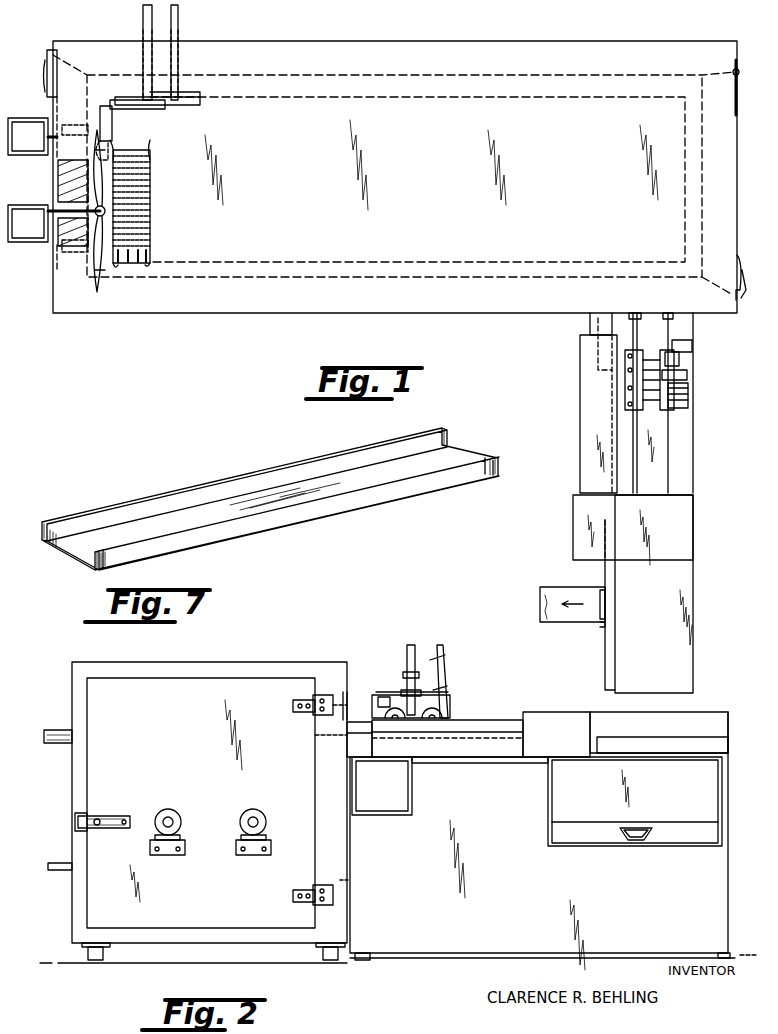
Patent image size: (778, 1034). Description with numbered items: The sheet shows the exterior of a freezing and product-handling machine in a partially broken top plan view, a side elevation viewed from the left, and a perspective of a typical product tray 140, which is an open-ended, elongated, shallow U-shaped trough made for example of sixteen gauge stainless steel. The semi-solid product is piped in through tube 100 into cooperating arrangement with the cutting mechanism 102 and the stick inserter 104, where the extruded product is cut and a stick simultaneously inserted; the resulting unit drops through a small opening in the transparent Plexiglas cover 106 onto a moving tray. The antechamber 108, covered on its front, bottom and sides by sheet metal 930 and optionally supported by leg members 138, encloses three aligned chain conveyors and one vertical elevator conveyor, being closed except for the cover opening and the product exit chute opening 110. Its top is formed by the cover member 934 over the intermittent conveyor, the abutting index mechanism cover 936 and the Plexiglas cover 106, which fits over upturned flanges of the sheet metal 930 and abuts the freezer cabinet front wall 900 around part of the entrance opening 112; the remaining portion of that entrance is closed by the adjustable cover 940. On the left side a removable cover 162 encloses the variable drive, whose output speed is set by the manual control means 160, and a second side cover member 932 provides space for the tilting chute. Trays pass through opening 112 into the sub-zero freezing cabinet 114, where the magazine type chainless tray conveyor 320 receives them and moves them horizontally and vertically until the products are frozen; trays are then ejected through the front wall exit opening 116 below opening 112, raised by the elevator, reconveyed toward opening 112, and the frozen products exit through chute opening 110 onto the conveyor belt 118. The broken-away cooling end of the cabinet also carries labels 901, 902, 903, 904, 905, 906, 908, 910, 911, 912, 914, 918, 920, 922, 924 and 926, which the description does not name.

In FIG. 1, the tube 100 is at (689, 376).
In FIG. 2, the tube 100 is at (407, 656).
In FIG. 1, the cutting mechanism 102 is at (694, 352).
In FIG. 2, the cutting mechanism 102 is at (395, 684).
In FIG. 1, the stick inserter 104 is at (704, 394).
In FIG. 2, the stick inserter 104 is at (449, 660).
In FIG. 1, the Plexiglas cover 106 is at (662, 436).
In FIG. 2, the Plexiglas cover 106 is at (490, 720).
In FIG. 1, the antechamber 108 is at (699, 497).
In FIG. 2, the antechamber 108 is at (563, 706).
In FIG. 1, the product exit chute opening 110 is at (603, 624).
In FIG. 2, the product exit chute opening 110 is at (641, 843).
In FIG. 1, the opening 112 is at (632, 300).
In FIG. 2, the opening 112 is at (318, 740).
In FIG. 1, the sub-zero freezing cabinet 114 is at (430, 317).
In FIG. 2, the sub-zero freezing cabinet 114 is at (287, 652).
In FIG. 2, the front wall exit opening 116 is at (360, 874).
In FIG. 1, the conveyor belt 118 is at (560, 590).
In FIG. 2, the leg members 138 is at (368, 961).
In FIG. 7, the product tray 140 is at (340, 514).
In FIG. 2, the manual control means 160 is at (382, 827).
In FIG. 1, the removable cover 162 is at (590, 330).
In FIG. 2, the removable cover 162 is at (400, 791).
In FIG. 1, the magazine type chainless tray conveyor 320 is at (195, 94).
In FIG. 1, the freezer cabinet front wall 900 is at (305, 313).
In FIG. 1, the housing wall 901 is at (434, 165).
In FIG. 2, the housing wall 901 is at (210, 662).
In FIG. 1, the housing 902 is at (478, 40).
In FIG. 2, the housing 902 is at (72, 768).
In FIG. 2, the base frame 903 is at (200, 944).
In FIG. 1, the side wall 904 is at (735, 147).
In FIG. 1, the inner wall 905 is at (58, 175).
In FIG. 2, the inner wall 905 is at (175, 705).
In FIG. 1, the latch 906 is at (47, 70).
In FIG. 2, the latch 906 is at (103, 816).
In FIG. 1, the insulation 908 is at (58, 192).
In FIG. 1, the coil 910 is at (128, 140).
In FIG. 1, the pipe 911 is at (180, 28).
In FIG. 2, the pipe 911 is at (60, 864).
In FIG. 1, the pipe 912 is at (141, 28).
In FIG. 2, the pipe 912 is at (55, 730).
In FIG. 1, the bracket 914 is at (165, 135).
In FIG. 1, the support 918 is at (140, 134).
In FIG. 1, the motor 920 is at (29, 118).
In FIG. 2, the motor 920 is at (243, 812).
In FIG. 2, the motor mount 922 is at (236, 848).
In FIG. 1, the mount 924 is at (72, 125).
In FIG. 1, the fan 926 is at (50, 238).
In FIG. 2, the sheet metal 930 is at (447, 940).
In FIG. 1, the second side cover member 932 is at (606, 660).
In FIG. 2, the second side cover member 932 is at (552, 806).
In FIG. 1, the cover member 934 is at (688, 580).
In FIG. 2, the cover member 934 is at (700, 714).
In FIG. 1, the index mechanism cover 936 is at (585, 437).
In FIG. 2, the index mechanism cover 936 is at (478, 763).
In FIG. 2, the adjustable cover 940 is at (345, 700).